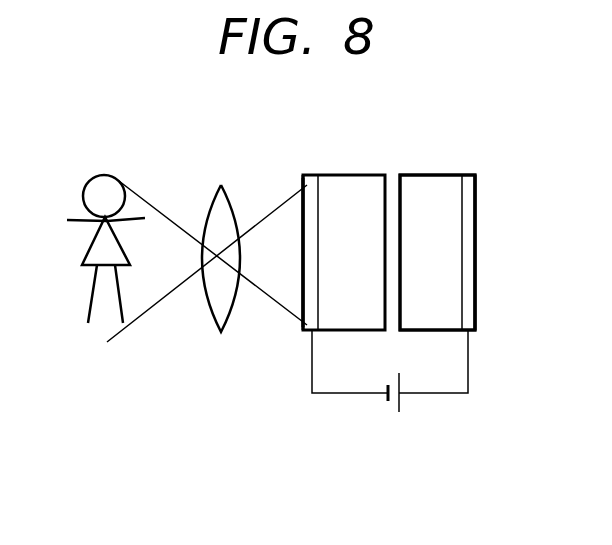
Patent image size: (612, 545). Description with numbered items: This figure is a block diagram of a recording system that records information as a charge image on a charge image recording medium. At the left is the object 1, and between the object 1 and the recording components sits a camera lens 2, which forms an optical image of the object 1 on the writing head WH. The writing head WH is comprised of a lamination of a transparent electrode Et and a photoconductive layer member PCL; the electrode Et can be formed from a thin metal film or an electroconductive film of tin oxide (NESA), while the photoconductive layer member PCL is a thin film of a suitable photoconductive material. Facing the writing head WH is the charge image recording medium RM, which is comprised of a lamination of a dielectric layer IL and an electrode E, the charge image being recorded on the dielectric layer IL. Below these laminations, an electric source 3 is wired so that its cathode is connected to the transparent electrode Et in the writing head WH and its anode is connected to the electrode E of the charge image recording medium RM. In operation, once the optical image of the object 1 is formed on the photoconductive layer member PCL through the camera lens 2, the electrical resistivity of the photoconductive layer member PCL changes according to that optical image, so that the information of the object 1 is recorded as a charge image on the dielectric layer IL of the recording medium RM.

The object 1 is at (88, 176).
The camera lens 2 is at (213, 198).
The electric source 3 is at (393, 403).
The transparent electrode Et is at (313, 178).
The photoconductive layer member PCL is at (347, 185).
The dielectric layer IL is at (420, 187).
The charge image recording medium RM is at (473, 156).
The electrode E is at (470, 257).
The writing head WH is at (293, 338).